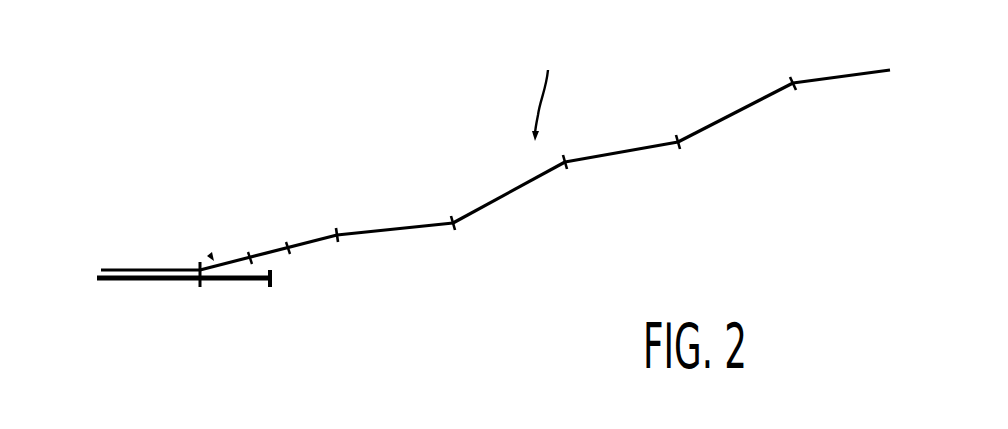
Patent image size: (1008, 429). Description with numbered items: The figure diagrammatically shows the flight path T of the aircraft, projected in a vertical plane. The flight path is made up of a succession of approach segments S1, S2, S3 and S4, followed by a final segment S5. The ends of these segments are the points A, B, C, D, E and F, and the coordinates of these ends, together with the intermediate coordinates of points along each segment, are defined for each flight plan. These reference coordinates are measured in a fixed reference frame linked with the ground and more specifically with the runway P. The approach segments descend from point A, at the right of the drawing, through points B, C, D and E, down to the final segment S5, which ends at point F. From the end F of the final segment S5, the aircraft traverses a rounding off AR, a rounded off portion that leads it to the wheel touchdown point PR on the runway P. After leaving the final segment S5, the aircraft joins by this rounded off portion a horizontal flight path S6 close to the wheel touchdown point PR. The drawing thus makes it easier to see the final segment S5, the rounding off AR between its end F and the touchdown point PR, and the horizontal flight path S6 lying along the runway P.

The approach segment S1 is at (735, 113).
The approach segment S2 is at (628, 151).
The approach segment S3 is at (510, 191).
The approach segment S4 is at (405, 229).
The final segment S5 is at (288, 249).
The horizontal flight path S6 is at (118, 269).
The end of approach segment A is at (792, 103).
The end of approach segment B is at (680, 161).
The end of approach segment C is at (570, 181).
The end of approach segment D is at (454, 243).
The end of approach segment E is at (336, 256).
The end of the final segment F is at (250, 257).
The flight path T is at (542, 92).
The rounding off AR is at (211, 257).
The runway P is at (122, 281).
The wheel touchdown point PR is at (203, 284).